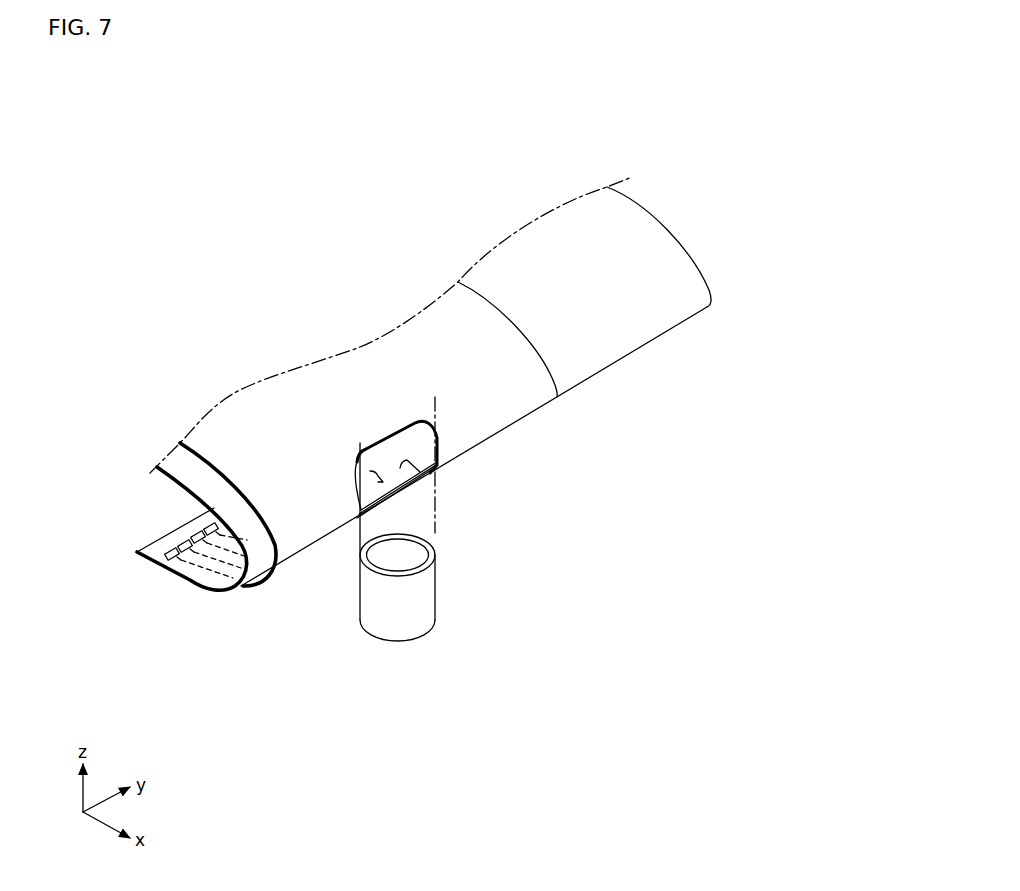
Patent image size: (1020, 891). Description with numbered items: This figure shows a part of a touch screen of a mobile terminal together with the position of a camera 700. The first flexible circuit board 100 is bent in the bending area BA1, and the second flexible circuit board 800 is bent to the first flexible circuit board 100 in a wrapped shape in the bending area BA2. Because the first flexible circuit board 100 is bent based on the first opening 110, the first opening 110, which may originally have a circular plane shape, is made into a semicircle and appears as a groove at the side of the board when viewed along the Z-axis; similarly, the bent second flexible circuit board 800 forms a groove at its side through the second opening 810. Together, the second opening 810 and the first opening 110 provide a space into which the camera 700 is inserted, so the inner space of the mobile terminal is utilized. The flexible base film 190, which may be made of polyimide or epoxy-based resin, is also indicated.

The first flexible circuit board 100 is at (610, 378).
The first opening 110 is at (423, 478).
The base film 190 is at (632, 218).
The camera 700 is at (433, 603).
The second flexible circuit board 800 is at (507, 441).
The second opening 810 is at (358, 496).
The bending area BA1 is at (185, 580).
The bending area BA2 is at (205, 466).